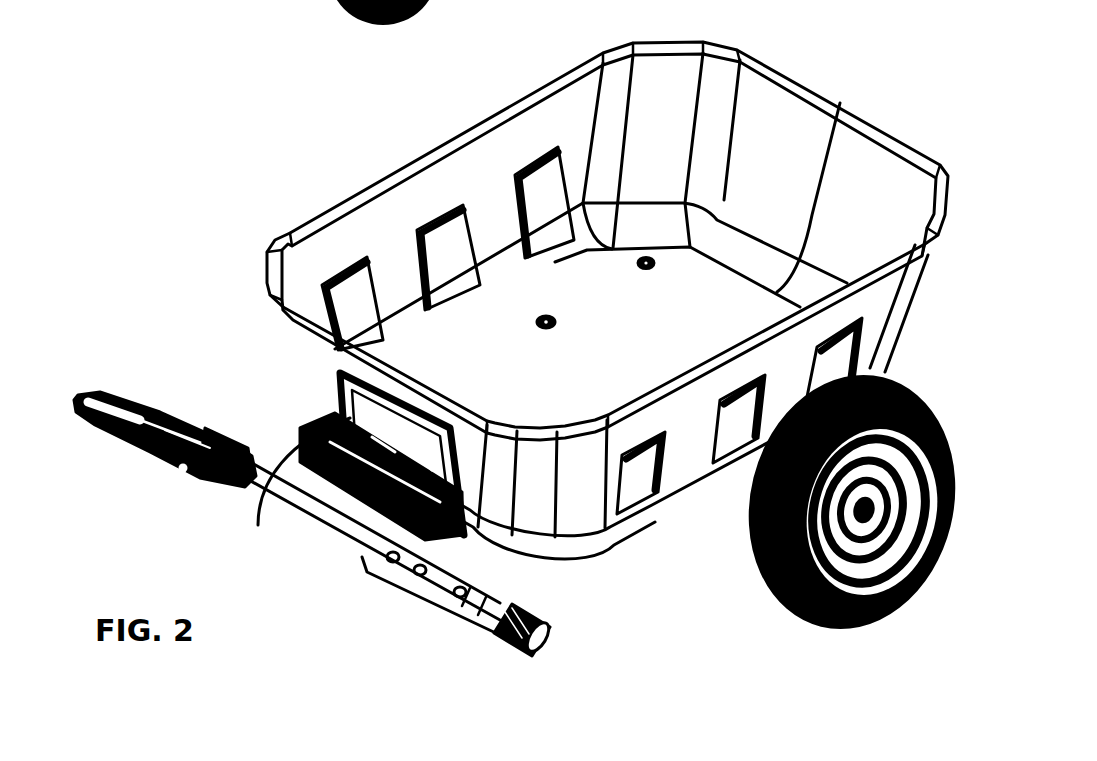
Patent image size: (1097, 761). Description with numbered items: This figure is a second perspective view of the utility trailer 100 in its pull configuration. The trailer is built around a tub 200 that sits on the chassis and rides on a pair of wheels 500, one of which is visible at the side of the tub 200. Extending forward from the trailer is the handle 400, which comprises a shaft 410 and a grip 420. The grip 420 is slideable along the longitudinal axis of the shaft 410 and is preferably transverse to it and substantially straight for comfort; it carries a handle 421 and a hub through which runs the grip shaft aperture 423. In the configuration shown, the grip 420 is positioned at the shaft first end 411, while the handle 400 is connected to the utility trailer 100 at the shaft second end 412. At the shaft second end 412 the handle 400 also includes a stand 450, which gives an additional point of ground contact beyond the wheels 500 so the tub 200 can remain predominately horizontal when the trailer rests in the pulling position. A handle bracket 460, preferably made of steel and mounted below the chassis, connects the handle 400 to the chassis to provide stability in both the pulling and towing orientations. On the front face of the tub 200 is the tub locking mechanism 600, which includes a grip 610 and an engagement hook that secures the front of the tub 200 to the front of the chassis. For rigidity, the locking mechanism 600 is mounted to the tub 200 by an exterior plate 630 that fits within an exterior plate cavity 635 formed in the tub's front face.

The utility trailer 100 is at (255, 149).
The tub 200 is at (790, 103).
The handle 400 is at (200, 315).
The shaft 410 is at (328, 527).
The shaft first end 411 is at (258, 440).
The shaft second end 412 is at (449, 615).
The grip 420 is at (158, 395).
The handle 421 is at (160, 473).
The grip shaft aperture 423 is at (188, 422).
The stand 450 is at (497, 607).
The handle bracket 460 is at (392, 585).
The wheels 500 is at (748, 565).
The tub locking mechanism 600 is at (262, 522).
The grip 610 is at (330, 470).
The exterior plate 630 is at (440, 425).
The exterior plate cavity 635 is at (465, 430).